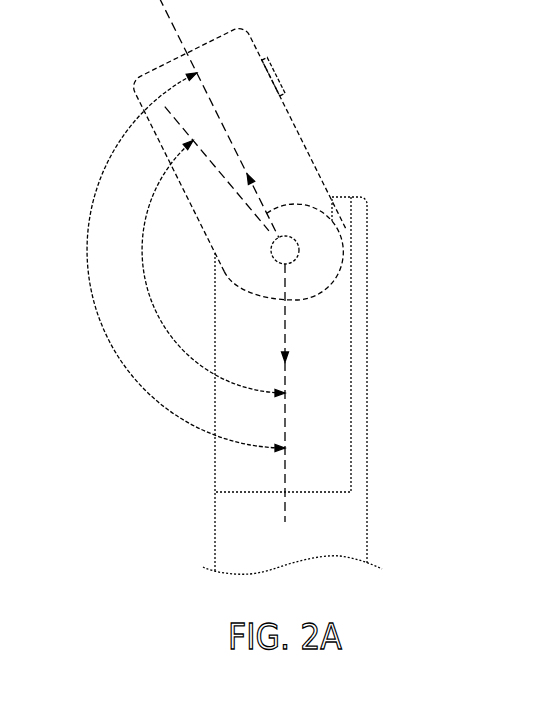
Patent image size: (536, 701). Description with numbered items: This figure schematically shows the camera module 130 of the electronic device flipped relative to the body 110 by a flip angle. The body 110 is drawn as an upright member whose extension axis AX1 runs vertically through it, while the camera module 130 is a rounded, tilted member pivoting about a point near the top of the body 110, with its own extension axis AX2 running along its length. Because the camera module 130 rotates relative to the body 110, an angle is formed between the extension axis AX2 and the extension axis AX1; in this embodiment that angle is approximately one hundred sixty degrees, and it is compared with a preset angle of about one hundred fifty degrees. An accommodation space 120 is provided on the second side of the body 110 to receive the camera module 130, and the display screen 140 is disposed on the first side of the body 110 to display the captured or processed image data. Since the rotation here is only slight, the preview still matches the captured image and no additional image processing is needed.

The camera module 130 is at (283, 76).
The extension axis AX2 is at (328, 213).
The extension axis AX1 is at (287, 323).
The accommodation space 120 is at (327, 388).
The display screen 140 is at (355, 435).
The body 110 is at (357, 533).